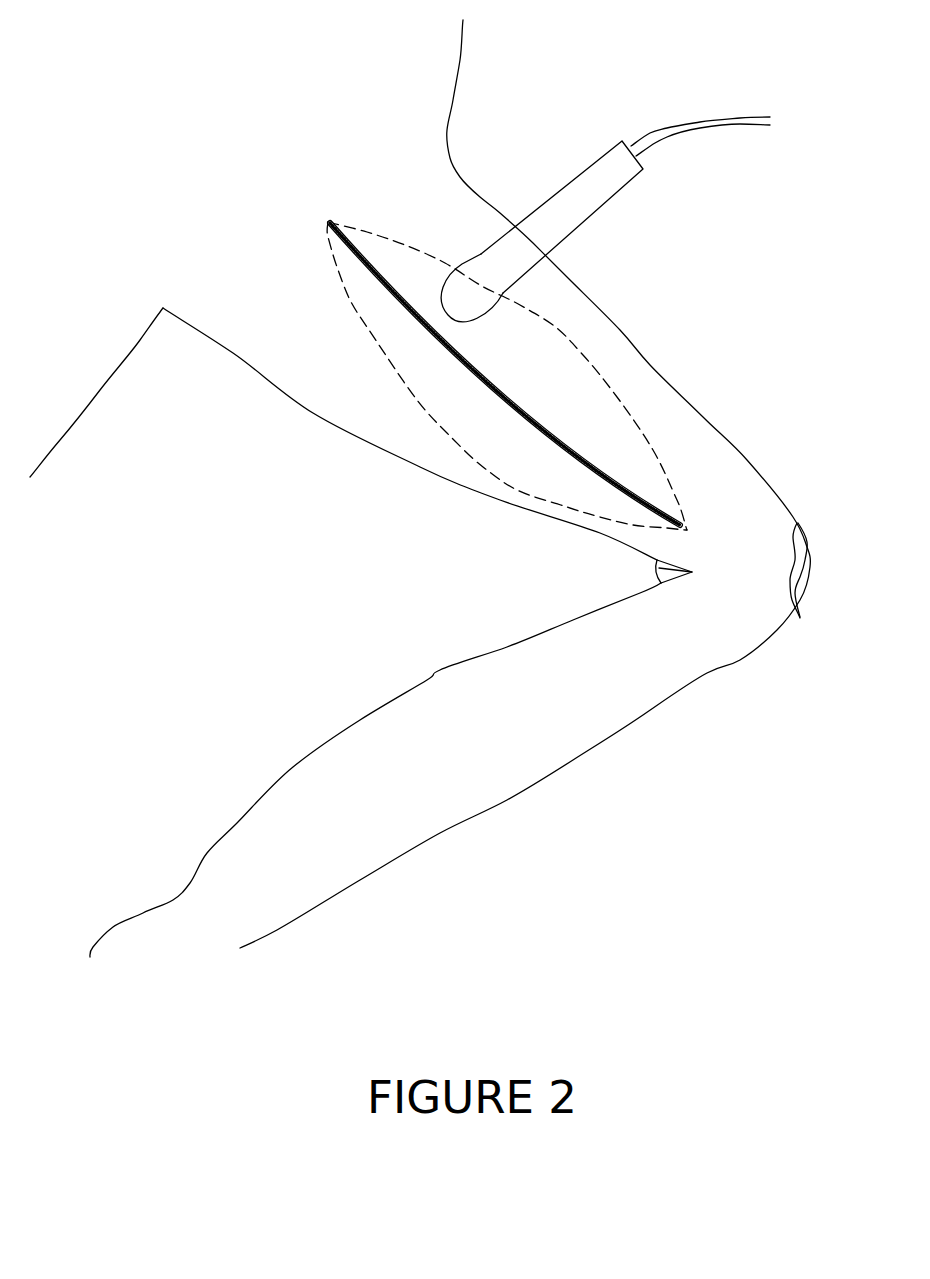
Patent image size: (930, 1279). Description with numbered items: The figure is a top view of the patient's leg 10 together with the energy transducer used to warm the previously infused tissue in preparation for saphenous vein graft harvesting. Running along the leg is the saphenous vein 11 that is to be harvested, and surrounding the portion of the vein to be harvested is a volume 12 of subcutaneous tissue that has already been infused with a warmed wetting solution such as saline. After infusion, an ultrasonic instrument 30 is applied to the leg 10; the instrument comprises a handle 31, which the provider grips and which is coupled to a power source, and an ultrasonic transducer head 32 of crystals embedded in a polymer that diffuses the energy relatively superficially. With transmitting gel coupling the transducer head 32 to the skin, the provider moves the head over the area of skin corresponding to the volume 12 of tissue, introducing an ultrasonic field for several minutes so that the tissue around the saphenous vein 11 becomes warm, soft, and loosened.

The patient's leg 10 is at (725, 320).
The saphenous vein 11 is at (650, 507).
The volume of tissue 12 is at (497, 433).
The ultrasonic instrument 30 is at (605, 181).
The handle 31 is at (602, 205).
The ultrasonic transducer head 32 is at (457, 266).